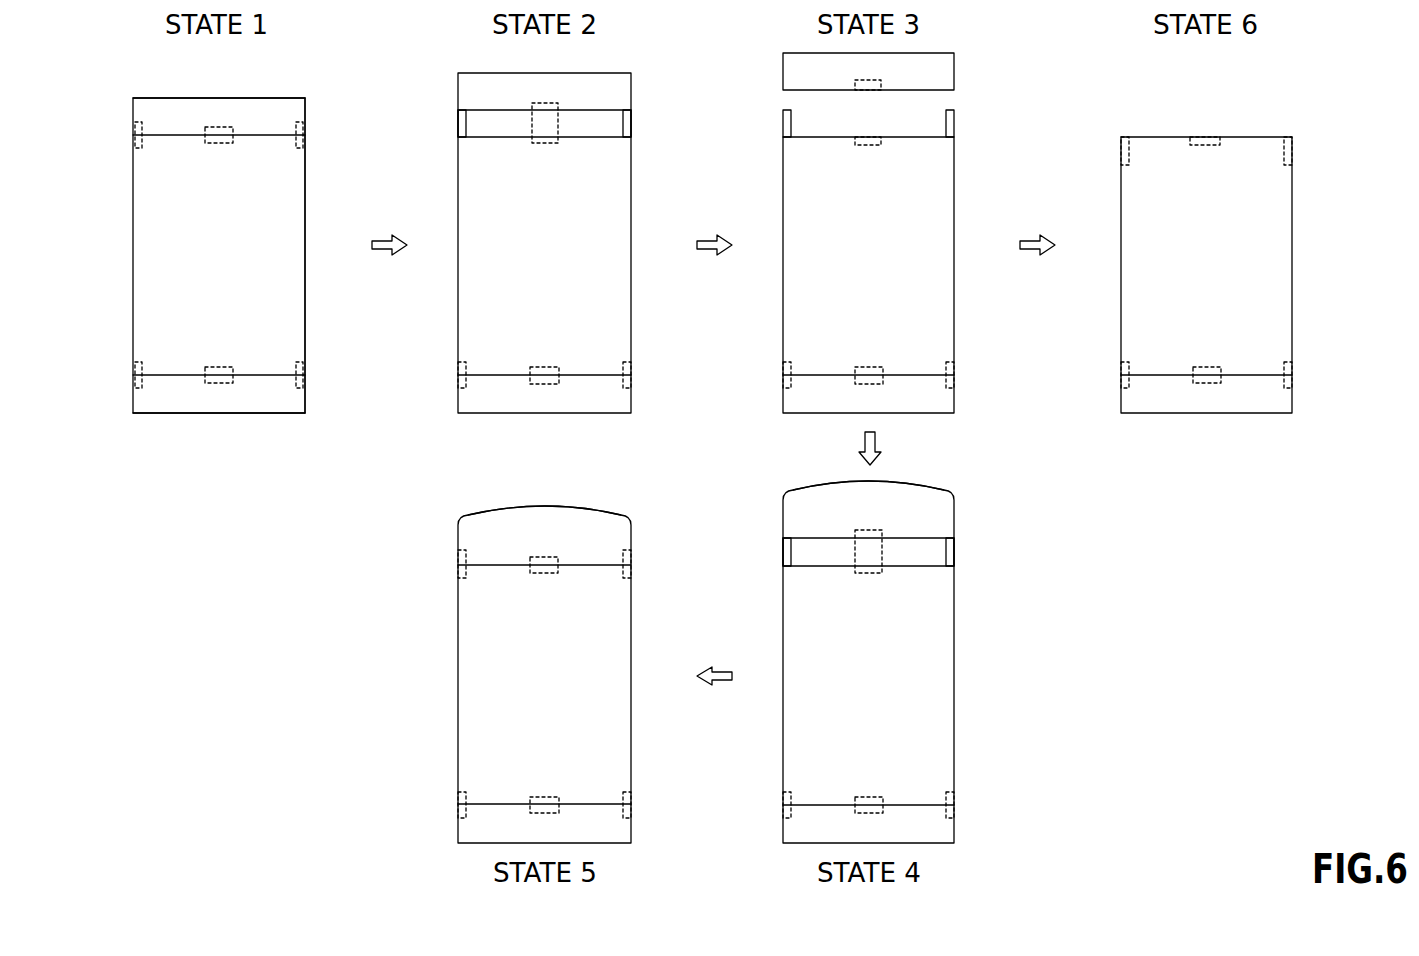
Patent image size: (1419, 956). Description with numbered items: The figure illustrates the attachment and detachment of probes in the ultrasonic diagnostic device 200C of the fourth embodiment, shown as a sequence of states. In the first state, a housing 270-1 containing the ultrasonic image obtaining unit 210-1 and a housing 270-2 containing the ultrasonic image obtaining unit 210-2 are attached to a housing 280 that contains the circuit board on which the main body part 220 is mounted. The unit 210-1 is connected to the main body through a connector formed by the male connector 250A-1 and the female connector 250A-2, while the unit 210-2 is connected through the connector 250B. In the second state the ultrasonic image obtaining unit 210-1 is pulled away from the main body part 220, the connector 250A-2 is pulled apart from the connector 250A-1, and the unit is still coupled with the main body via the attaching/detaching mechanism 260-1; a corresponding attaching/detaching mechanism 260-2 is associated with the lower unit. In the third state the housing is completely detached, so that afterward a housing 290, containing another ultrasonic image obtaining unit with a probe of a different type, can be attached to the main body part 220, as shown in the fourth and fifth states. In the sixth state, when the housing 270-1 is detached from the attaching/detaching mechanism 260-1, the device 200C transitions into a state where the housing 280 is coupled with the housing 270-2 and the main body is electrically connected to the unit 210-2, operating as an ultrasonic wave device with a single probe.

The ultrasonic diagnostic device 200C is at (278, 62).
The ultrasonic image obtaining unit 210-1 is at (305, 106).
The ultrasonic image obtaining unit 210-2 is at (305, 396).
The main body part 220 is at (293, 212).
The male connector 250A-1 is at (233, 143).
The female connector 250A-2 is at (221, 127).
The connector 250B is at (217, 367).
The attaching/detaching mechanism 260-1 is at (142, 148).
The attaching/detaching mechanism 260-2 is at (140, 362).
The housing 270-1 is at (200, 96).
The housing 270-2 is at (200, 415).
The housing 280 is at (287, 266).
The housing 290 is at (954, 516).